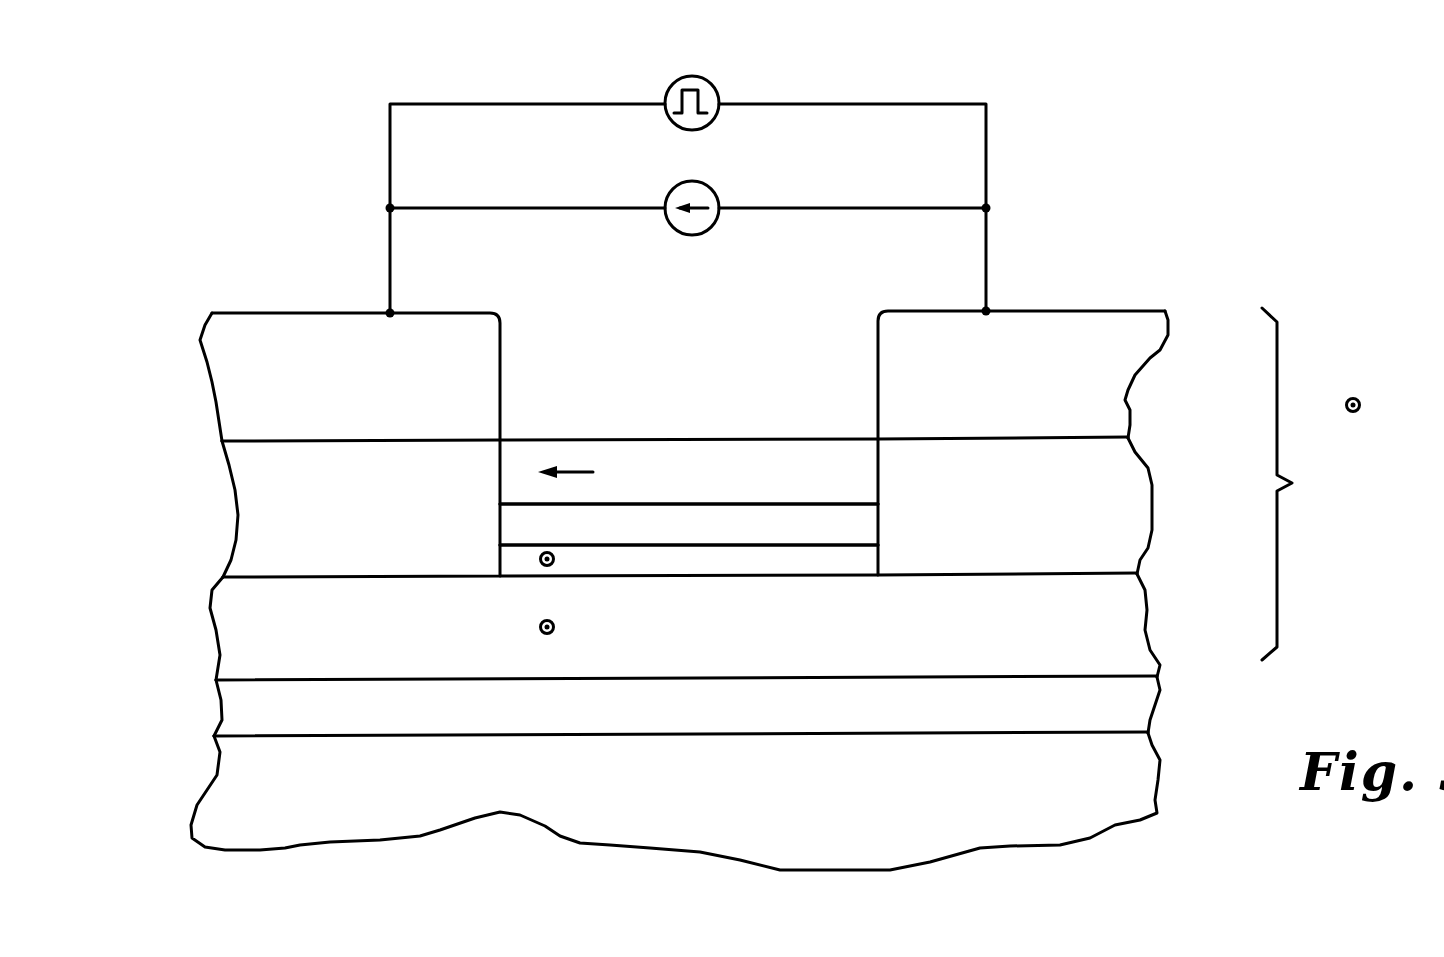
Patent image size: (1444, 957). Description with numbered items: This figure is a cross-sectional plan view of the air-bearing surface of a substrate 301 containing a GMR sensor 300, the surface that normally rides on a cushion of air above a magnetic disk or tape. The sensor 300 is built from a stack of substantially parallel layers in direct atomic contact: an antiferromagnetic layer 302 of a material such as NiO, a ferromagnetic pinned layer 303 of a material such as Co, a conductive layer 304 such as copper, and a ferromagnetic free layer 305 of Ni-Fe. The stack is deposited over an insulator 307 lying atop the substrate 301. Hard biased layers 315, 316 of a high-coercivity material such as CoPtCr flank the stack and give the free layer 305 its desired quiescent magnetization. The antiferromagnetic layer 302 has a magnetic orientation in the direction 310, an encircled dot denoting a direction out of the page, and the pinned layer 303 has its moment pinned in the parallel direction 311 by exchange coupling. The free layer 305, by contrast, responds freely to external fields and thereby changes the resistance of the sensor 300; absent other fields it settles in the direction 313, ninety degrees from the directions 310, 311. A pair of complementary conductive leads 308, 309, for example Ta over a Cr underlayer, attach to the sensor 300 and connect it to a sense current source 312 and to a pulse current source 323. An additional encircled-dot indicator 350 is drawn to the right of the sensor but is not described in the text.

The GMR sensor 300 is at (1309, 484).
The substrate 301 is at (1117, 787).
The antiferromagnetic layer 302 is at (1118, 615).
The ferromagnetic pinned layer 303 is at (838, 558).
The conductive layer 304 is at (838, 520).
The ferromagnetic free layer 305 is at (838, 482).
The insulator 307 is at (1117, 705).
The conductive lead 308 is at (258, 383).
The conductive lead 309 is at (1088, 397).
The magnetic orientation direction 310 is at (554, 627).
The pinned magnetic moment direction 311 is at (553, 557).
The sense current source 312 is at (712, 228).
The quiescent magnetization direction 313 is at (593, 472).
The hard biased layer 315 is at (268, 510).
The hard biased layer 316 is at (1105, 497).
The pulse current source 323 is at (712, 122).
The external field direction indicator 350 is at (1360, 405).